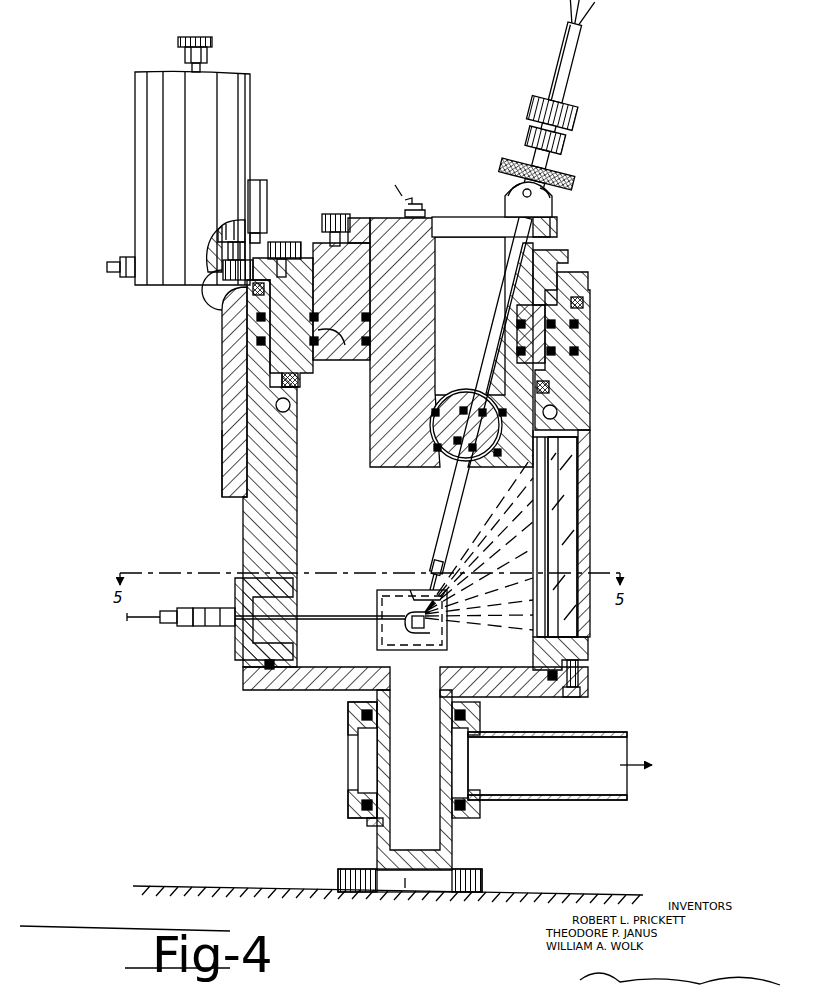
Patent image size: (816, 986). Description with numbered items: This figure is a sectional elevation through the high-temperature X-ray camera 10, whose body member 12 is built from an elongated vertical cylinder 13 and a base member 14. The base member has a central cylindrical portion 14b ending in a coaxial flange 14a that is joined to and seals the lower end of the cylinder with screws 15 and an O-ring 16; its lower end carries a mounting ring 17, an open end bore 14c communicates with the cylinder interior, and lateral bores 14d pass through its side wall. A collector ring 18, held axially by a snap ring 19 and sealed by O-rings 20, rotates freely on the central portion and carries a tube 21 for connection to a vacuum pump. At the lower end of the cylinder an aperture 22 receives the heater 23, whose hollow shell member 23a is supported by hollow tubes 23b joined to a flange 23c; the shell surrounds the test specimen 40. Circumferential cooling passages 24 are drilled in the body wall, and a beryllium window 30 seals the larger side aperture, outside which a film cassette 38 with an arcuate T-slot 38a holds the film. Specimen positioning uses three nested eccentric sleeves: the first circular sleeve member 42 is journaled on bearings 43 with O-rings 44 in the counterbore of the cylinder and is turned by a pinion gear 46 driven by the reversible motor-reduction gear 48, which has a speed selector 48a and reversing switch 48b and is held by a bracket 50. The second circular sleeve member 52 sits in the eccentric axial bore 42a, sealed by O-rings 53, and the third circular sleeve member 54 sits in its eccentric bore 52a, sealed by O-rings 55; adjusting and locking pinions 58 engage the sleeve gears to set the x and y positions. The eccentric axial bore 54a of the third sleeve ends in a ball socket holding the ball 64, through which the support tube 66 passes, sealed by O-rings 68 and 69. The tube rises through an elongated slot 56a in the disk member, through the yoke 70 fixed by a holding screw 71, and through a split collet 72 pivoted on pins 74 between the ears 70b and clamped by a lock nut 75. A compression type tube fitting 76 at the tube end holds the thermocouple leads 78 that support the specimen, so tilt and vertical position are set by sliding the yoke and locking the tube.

The camera 10 is at (176, 455).
The body member 12 is at (240, 512).
The vertical cylinder 13 is at (245, 540).
The base member 14 is at (300, 712).
The coaxial flange 14a is at (270, 690).
The central cylindrical portion 14b is at (377, 840).
The open end bore 14c is at (414, 727).
The lateral bore 14d is at (442, 778).
The screws 15 is at (583, 697).
The O-ring 16 is at (545, 690).
The mounting ring 17 is at (485, 886).
The collector ring 18 is at (348, 752).
The snap ring 19 is at (367, 821).
The O-rings 20 is at (348, 712).
The tube 21 is at (585, 797).
The aperture 22 is at (318, 600).
The heater 23 is at (392, 588).
The hollow shell member 23a is at (447, 645).
The hollow tubes 23b is at (326, 626).
The flange 23c is at (235, 640).
The circumferential cooling passages 24 is at (553, 412).
The beryllium window 30 is at (548, 515).
The film cassette 38 is at (590, 508).
The arcuate T-slot 38a is at (577, 533).
The test specimen 40 is at (430, 625).
The first circular sleeve member 42 is at (245, 372).
The eccentric axial bore 42a is at (342, 360).
The bearings 43 is at (256, 292).
The O-rings 44 is at (258, 328).
The pinion gear 46 is at (205, 290).
The reversible motor-reduction gear 48 is at (142, 133).
The speed selector 48a is at (198, 40).
The reversing switch 48b is at (262, 180).
The bracket 50 is at (222, 434).
The second circular sleeve member 52 is at (310, 240).
The eccentric bore 52a is at (432, 312).
The O-rings 53 is at (310, 378).
The third circular sleeve member 54 is at (366, 440).
The eccentric axial bore 54a is at (462, 272).
The O-rings 55 is at (430, 335).
The elongated slot 56a is at (447, 225).
The pinion 58 is at (336, 214).
The ball 64 is at (465, 395).
The support tube 66 is at (448, 482).
The O-rings 68 is at (500, 468).
The O-rings 69 is at (465, 480).
The yoke 70 is at (458, 205).
The ears 70b is at (552, 207).
The holding screw 71 is at (410, 204).
The split collet 72 is at (522, 195).
The pins 74 is at (510, 192).
The lock nut 75 is at (572, 182).
The compression type tube fitting 76 is at (522, 128).
The thermocouple leads 78 is at (577, 68).